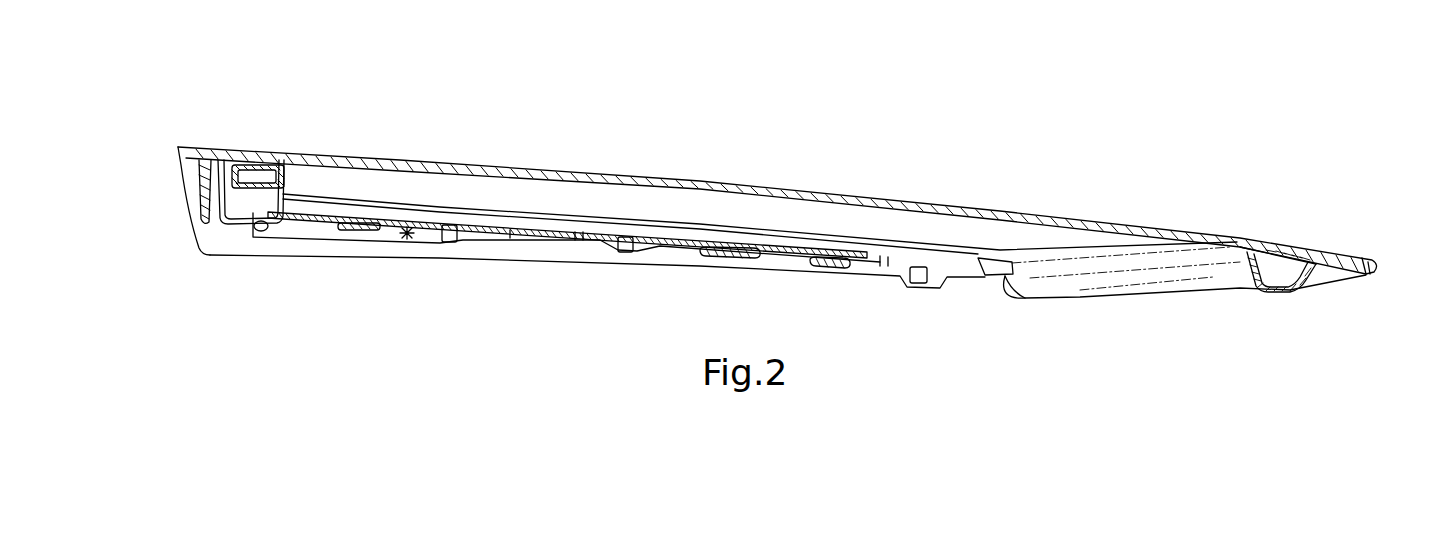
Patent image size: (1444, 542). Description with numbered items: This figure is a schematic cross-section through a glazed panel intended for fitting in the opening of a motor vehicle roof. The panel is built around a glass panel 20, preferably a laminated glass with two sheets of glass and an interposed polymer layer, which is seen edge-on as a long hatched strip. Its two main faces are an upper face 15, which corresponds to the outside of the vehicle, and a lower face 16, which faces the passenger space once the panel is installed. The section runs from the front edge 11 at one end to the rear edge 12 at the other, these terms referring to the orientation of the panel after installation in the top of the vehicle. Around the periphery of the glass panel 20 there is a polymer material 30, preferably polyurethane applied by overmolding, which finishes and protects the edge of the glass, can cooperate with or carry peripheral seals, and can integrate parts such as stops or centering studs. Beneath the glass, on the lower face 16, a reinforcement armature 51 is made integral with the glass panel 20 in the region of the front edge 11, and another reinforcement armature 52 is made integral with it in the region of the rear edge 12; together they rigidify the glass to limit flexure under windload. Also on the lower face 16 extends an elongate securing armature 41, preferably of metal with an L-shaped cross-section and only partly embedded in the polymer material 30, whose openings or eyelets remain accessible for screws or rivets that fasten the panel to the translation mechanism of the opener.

The front edge 11 is at (1400, 362).
The rear edge 12 is at (158, 144).
The upper face 15 is at (452, 104).
The lower face 16 is at (553, 320).
The glass panel 20 is at (538, 175).
The polymer material 30 is at (220, 181).
The securing armature 41 is at (390, 239).
The reinforcement armature 51 is at (1293, 293).
The reinforcement armature 52 is at (248, 206).